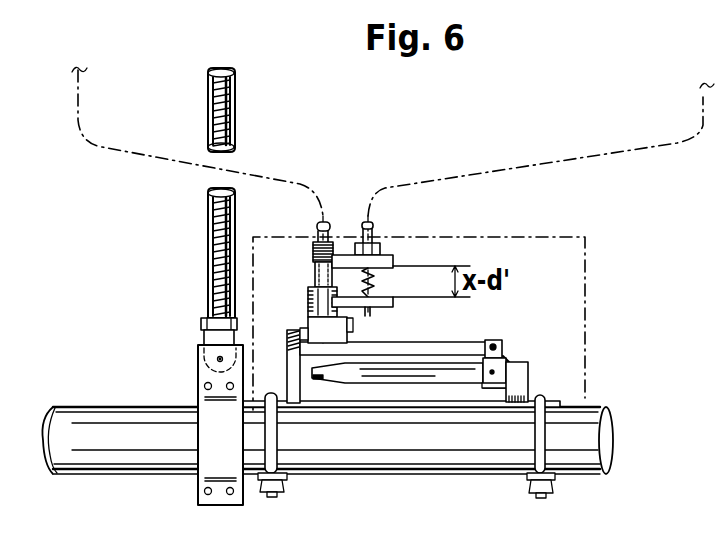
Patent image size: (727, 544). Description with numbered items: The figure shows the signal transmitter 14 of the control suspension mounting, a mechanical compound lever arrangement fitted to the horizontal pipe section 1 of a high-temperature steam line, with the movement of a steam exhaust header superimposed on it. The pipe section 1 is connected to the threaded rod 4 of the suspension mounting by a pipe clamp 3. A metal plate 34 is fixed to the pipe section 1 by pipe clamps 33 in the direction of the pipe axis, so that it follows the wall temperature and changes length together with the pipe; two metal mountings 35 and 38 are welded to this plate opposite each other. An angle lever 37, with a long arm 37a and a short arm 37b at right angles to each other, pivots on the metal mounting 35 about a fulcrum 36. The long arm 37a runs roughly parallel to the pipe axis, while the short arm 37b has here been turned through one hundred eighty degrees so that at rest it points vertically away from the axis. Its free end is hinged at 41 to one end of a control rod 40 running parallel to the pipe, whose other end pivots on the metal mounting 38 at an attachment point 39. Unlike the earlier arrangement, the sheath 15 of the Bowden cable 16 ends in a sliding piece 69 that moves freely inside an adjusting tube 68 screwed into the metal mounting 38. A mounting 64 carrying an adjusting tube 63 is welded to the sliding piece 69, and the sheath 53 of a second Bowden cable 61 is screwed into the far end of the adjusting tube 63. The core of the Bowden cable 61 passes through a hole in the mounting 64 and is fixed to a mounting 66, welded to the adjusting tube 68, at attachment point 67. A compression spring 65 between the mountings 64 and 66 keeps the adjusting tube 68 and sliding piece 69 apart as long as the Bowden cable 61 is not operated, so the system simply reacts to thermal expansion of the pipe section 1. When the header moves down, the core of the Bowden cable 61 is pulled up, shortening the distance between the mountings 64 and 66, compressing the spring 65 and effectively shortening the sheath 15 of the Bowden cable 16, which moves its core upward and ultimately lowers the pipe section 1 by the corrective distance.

The horizontal pipe section 1 is at (398, 474).
The pipe clamp 3 is at (197, 502).
The threaded rod 4 is at (233, 110).
The signal transmitter 14 is at (515, 239).
The sheath of the Bowden cable 15 is at (318, 226).
The Bowden cable 16 is at (80, 93).
The pipe clamps 33 is at (282, 455).
The metal plate 34 is at (436, 407).
The metal mounting 35 is at (535, 390).
The fulcrum 36 is at (494, 372).
The angle lever 37 is at (435, 419).
The long arm 37a is at (377, 387).
The short arm 37b is at (325, 381).
The metal mounting 38 is at (296, 382).
The attachment point 39 is at (295, 343).
The control rod 40 is at (450, 345).
The hinge 41 is at (502, 345).
The sheath of the Bowden cable 53 is at (372, 228).
The Bowden cable 61 is at (383, 187).
The adjusting tube 63 is at (378, 244).
The mounting 64 is at (393, 262).
The compression spring 65 is at (372, 283).
The mounting 66 is at (393, 303).
The attachment point 67 is at (368, 310).
The adjusting tube 68 is at (308, 302).
The sliding piece 69 is at (315, 273).